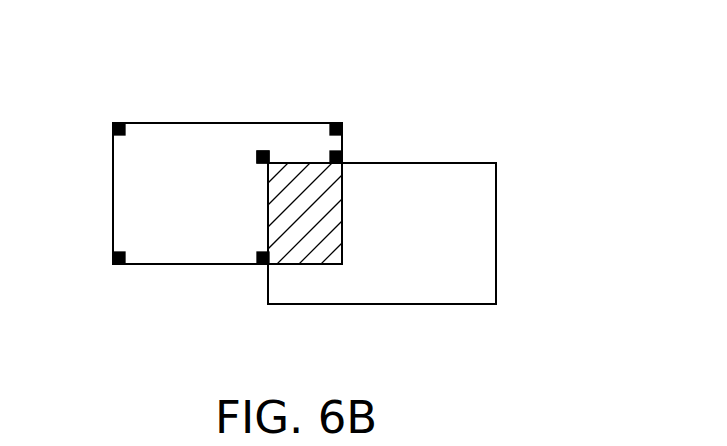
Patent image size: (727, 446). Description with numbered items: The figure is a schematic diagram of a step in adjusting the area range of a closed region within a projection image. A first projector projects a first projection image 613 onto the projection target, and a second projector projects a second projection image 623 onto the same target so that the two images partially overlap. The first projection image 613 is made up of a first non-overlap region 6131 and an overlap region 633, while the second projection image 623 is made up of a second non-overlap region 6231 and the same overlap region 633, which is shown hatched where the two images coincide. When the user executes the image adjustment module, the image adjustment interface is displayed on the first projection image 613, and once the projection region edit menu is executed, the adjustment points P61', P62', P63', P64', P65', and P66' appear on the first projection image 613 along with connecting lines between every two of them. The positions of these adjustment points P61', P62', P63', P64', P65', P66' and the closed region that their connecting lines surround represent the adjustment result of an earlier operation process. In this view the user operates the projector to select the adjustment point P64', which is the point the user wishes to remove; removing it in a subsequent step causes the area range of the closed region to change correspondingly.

The first projection image 613 is at (218, 123).
The first non-overlap region 6131 is at (263, 140).
The second projection image 623 is at (414, 163).
The second non-overlap region 6231 is at (455, 182).
The overlap region 633 is at (315, 195).
The adjustment point P61' is at (121, 93).
The adjustment point P62' is at (341, 99).
The adjustment point P63' is at (373, 205).
The adjustment point P64' is at (220, 181).
The adjustment point P65' is at (245, 295).
The adjustment point P66' is at (109, 284).